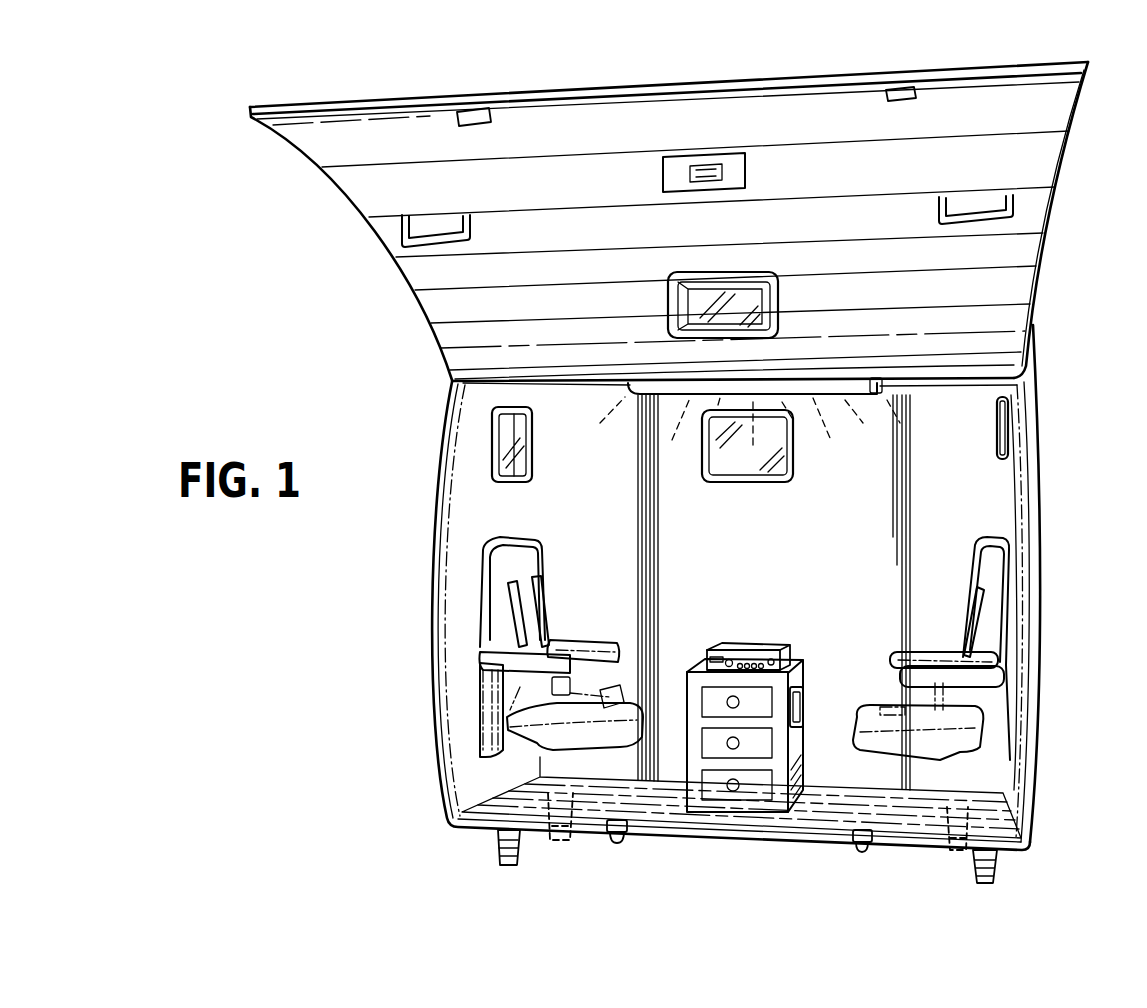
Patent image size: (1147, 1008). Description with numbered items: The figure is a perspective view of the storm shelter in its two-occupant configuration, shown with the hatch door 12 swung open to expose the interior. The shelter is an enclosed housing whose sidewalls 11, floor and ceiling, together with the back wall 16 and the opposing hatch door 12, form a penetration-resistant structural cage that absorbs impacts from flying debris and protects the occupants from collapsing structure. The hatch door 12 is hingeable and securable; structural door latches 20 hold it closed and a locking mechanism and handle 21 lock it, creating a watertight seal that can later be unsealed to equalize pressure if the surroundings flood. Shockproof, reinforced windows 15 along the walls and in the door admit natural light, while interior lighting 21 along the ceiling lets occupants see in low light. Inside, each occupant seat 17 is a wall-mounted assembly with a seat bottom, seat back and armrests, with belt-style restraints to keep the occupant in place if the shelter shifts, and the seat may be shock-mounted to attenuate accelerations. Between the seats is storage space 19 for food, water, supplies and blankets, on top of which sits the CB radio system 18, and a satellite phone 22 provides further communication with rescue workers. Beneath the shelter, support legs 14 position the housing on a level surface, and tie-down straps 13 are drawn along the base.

The sidewalls 11 is at (470, 483).
The hatch door 12 is at (1056, 120).
The tie-down straps 13 is at (933, 825).
The support legs 14 is at (990, 865).
The windows 15 is at (752, 300).
The back wall 16 is at (975, 523).
The occupant seat 17 is at (608, 620).
The CB radio system 18 is at (743, 648).
The storage space 19 is at (690, 772).
The door latches 20 is at (478, 118).
The interior lighting 21 is at (740, 182).
The satellite phone 22 is at (795, 690).